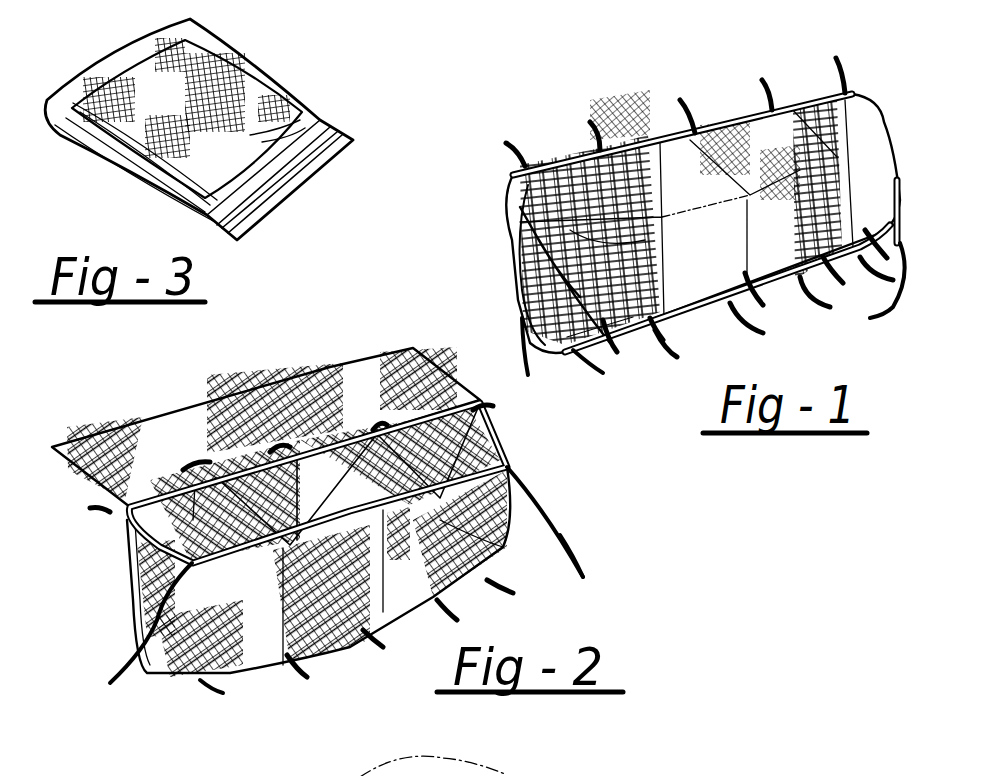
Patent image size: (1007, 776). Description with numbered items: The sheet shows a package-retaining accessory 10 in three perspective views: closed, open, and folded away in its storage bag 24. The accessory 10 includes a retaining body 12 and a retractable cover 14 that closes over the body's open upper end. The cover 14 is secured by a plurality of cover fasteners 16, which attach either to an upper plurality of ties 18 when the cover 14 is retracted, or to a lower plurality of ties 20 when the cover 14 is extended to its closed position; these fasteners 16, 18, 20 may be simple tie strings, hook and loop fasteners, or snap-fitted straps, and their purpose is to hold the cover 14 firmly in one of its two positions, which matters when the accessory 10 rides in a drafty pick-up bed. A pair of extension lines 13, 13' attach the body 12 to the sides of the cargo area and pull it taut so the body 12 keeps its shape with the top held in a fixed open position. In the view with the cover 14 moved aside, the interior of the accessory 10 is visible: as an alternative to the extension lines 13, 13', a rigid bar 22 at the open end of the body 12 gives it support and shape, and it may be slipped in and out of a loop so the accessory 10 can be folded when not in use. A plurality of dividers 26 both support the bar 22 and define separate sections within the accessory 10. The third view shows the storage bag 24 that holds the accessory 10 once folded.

In FIG. 1, the package-retaining accessory 10 is at (485, 201).
In FIG. 2, the package-retaining accessory 10 is at (140, 710).
In FIG. 1, the retaining body 12 is at (530, 268).
In FIG. 2, the retaining body 12 is at (503, 553).
In FIG. 1, the extension line 13 is at (495, 346).
In FIG. 2, the extension line 13 is at (117, 623).
In FIG. 1, the extension line 13' is at (876, 296).
In FIG. 2, the extension line 13' is at (602, 577).
In FIG. 1, the retractable cover 14 is at (568, 158).
In FIG. 2, the retractable cover 14 is at (297, 380).
In FIG. 1, the cover fasteners 16 is at (620, 350).
In FIG. 1, the upper ties 18 is at (767, 90).
In FIG. 1, the lower ties 20 is at (605, 375).
In FIG. 2, the lower ties 20 is at (223, 693).
In FIG. 2, the rigid bar 22 is at (507, 455).
In FIG. 3, the storage bag 24 is at (258, 88).
In FIG. 2, the dividers 26 is at (200, 478).